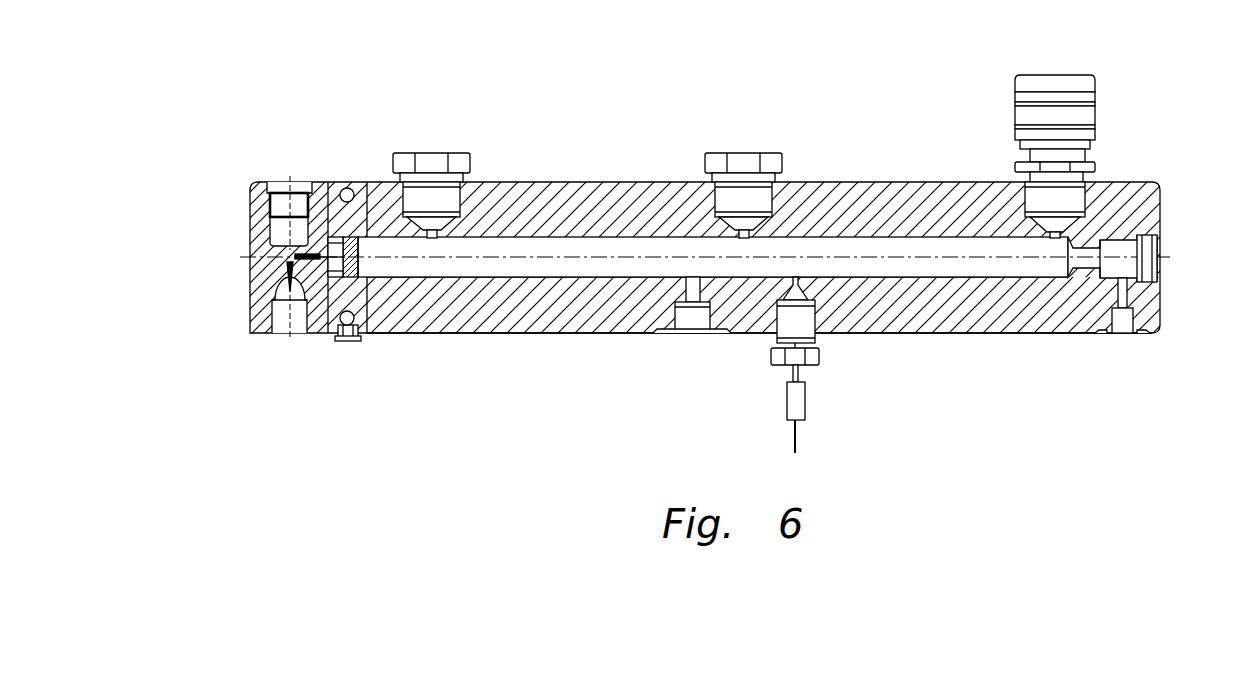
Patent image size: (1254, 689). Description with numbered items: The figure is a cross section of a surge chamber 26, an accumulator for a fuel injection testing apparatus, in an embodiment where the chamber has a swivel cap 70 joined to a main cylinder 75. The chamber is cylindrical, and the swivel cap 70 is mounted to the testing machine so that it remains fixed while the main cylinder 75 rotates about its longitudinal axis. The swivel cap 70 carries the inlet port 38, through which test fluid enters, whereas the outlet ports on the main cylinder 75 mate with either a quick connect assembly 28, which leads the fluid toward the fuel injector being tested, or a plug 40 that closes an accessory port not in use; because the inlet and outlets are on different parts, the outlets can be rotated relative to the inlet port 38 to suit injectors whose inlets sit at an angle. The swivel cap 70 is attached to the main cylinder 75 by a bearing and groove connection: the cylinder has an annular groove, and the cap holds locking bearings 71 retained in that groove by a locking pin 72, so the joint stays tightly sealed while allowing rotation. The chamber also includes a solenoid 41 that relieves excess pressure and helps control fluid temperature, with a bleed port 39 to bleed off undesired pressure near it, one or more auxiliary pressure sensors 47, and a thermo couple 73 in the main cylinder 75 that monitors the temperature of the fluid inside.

The surge chamber 26 is at (593, 182).
The quick connect assembly 28 is at (1017, 120).
The inlet port 38 is at (296, 186).
The bleed port 39 is at (1120, 333).
The plug 40 is at (452, 153).
The solenoid 41 is at (1160, 249).
The auxiliary pressure sensor 47 is at (282, 333).
The swivel cap 70 is at (250, 197).
The locking bearings 71 is at (352, 188).
The locking pin 72 is at (347, 342).
The thermo couple 73 is at (806, 400).
The main cylinder 75 is at (550, 333).